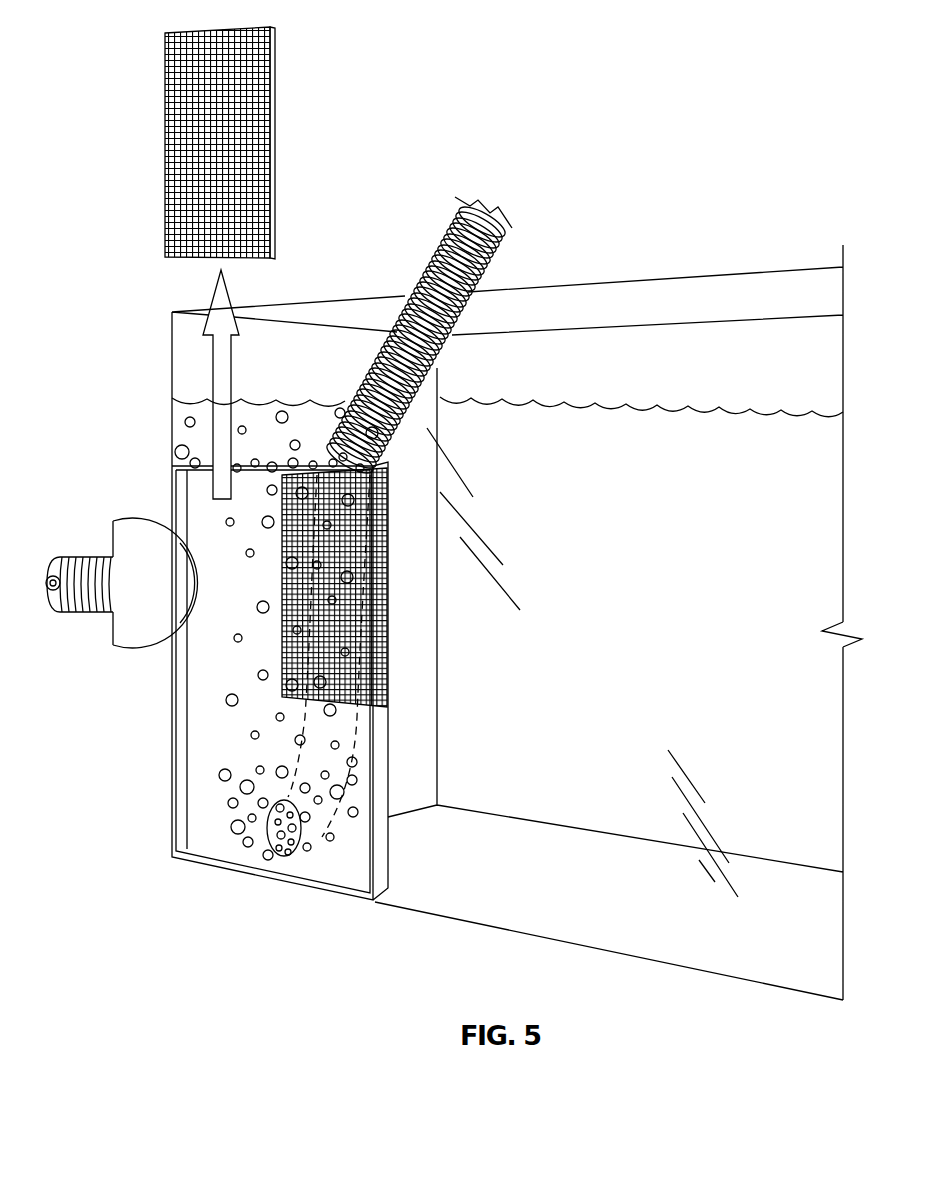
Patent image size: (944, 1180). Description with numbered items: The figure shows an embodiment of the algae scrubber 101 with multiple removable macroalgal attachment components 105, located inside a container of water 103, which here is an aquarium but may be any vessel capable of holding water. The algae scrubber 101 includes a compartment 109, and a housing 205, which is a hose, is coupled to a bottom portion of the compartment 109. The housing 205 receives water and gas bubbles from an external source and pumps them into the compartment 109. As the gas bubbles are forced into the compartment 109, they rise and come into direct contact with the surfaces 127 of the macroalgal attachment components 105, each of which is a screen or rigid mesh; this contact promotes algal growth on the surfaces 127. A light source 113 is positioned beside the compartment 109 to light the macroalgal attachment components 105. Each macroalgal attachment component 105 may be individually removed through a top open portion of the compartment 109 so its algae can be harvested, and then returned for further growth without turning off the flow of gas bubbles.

The algae scrubber 101 is at (337, 654).
The container of water 103 is at (760, 270).
The macroalgal attachment component 105 is at (353, 367).
The compartment 109 is at (388, 848).
The light source 113 is at (138, 632).
The surface 127 is at (257, 152).
The housing 205 is at (447, 347).